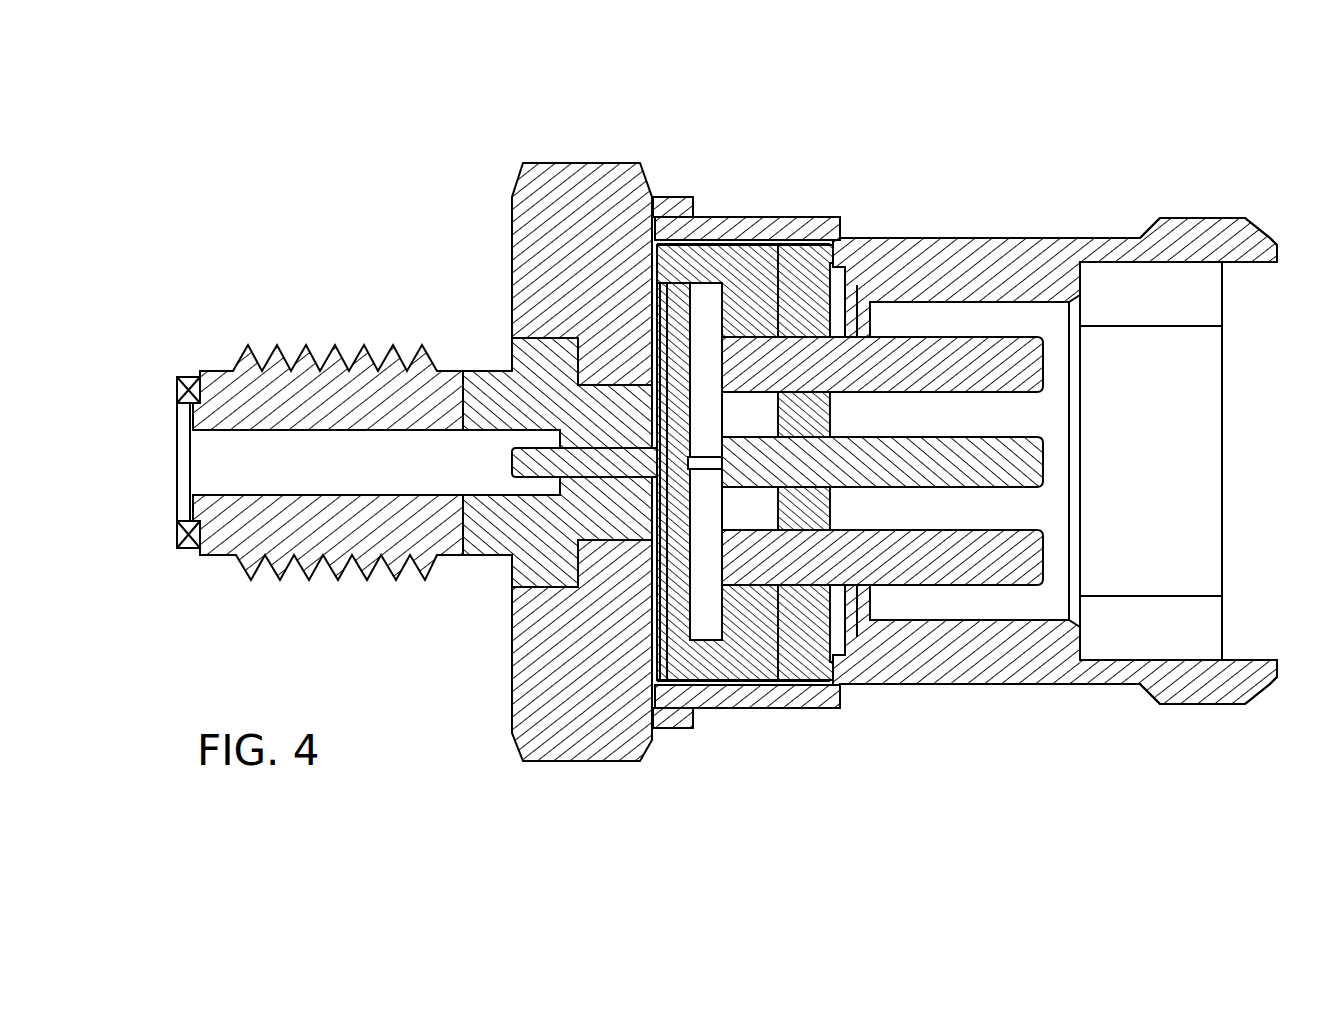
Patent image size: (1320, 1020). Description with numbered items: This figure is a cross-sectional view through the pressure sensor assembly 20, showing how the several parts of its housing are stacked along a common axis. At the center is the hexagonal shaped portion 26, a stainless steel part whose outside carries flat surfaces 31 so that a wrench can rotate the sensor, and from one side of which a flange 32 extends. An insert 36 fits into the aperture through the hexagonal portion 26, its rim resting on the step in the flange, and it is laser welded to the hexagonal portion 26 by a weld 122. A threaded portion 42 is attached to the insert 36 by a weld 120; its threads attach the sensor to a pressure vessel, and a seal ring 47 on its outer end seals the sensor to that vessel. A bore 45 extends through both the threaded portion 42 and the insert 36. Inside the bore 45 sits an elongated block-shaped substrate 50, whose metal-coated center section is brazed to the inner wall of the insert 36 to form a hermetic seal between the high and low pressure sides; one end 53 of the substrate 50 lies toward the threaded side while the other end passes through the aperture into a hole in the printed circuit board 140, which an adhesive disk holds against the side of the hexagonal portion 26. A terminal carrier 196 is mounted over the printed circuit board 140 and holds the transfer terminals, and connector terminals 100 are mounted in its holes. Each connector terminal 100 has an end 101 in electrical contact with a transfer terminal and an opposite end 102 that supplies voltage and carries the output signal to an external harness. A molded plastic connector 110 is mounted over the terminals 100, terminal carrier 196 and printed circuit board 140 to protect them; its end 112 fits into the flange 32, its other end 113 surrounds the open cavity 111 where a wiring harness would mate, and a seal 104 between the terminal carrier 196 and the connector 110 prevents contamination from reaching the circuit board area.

The pressure sensor assembly 20 is at (347, 155).
The hexagonal shaped portion 26 is at (584, 148).
The flat surfaces 31 is at (570, 761).
The flange 32 is at (673, 728).
The insert 36 is at (477, 357).
The threaded portion 42 is at (328, 340).
The bore 45 is at (203, 469).
The seal ring 47 is at (174, 376).
The substrate 50 is at (513, 627).
The end of substrate 53 is at (520, 462).
The connector terminals 100 is at (917, 337).
The connector terminal end 101 is at (753, 575).
The connector terminal end 102 is at (1030, 340).
The seal 104 is at (810, 288).
The connector 110 is at (983, 700).
The cavity 111 is at (1138, 466).
The end of connector 112 is at (825, 710).
The end of connector 113 is at (1215, 718).
The weld 120 is at (462, 570).
The weld 122 is at (545, 482).
The printed circuit board 140 is at (683, 317).
The terminal carrier 196 is at (755, 265).